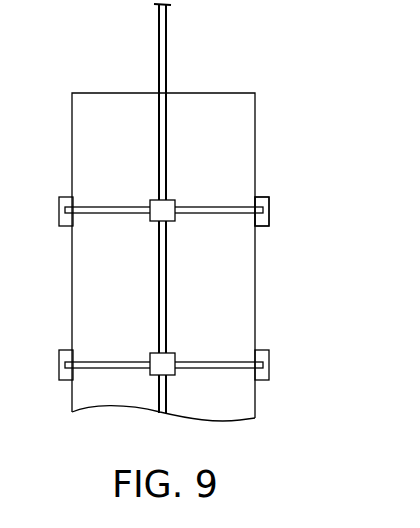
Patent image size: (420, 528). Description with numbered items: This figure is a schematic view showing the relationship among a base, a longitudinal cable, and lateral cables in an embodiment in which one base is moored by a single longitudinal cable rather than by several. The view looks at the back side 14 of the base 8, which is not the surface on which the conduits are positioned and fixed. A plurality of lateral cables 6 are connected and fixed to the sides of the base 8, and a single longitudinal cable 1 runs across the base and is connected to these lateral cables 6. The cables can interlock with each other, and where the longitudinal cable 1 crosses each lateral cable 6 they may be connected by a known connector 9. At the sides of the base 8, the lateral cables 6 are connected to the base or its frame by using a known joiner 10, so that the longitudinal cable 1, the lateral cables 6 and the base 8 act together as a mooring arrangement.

The longitudinal cable 1 is at (167, 43).
The lateral cable 6 is at (232, 209).
The base 8 is at (243, 125).
The connector 9 is at (178, 203).
The joiner 10 is at (269, 210).
The back side 14 is at (216, 289).